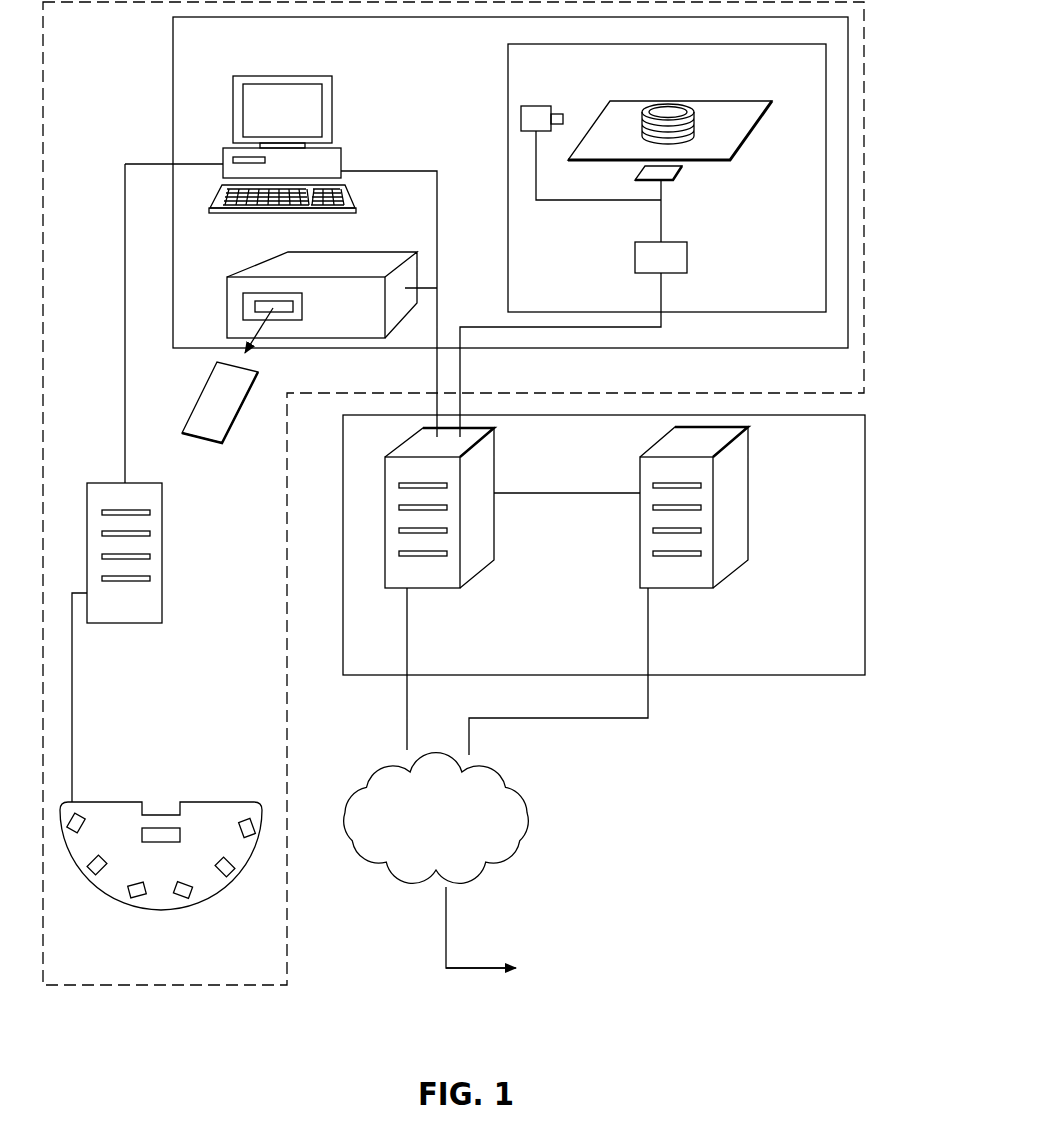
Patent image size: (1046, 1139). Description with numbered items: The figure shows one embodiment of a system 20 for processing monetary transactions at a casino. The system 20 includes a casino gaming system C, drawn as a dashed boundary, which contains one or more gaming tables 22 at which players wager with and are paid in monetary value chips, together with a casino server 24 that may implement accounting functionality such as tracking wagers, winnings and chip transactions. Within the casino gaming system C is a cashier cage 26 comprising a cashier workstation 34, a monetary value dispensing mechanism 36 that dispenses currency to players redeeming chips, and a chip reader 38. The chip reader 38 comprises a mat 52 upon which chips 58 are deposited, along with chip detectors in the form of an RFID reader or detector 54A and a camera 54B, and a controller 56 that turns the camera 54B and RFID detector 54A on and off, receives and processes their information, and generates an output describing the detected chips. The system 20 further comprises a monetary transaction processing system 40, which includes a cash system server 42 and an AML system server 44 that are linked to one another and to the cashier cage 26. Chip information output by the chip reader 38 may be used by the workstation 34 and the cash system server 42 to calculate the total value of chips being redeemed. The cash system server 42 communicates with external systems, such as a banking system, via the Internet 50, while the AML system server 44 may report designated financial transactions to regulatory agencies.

The casino gaming system C is at (864, 135).
The system 20 is at (897, 302).
The gaming table 22 is at (208, 891).
The casino server 24 is at (162, 532).
The cashier cage 26 is at (173, 52).
The cashier workstation 34 is at (340, 148).
The monetary value dispensing mechanism 36 is at (380, 258).
The chip reader 38 is at (508, 64).
The monetary transaction processing system 40 is at (865, 509).
The cash system server 42 is at (485, 465).
The AML system server 44 is at (737, 468).
The Internet 50 is at (545, 806).
The mat 52 is at (730, 140).
The RFID reader or detector 54A is at (680, 172).
The camera 54B is at (537, 106).
The controller 56 is at (687, 250).
The chips 58 is at (686, 104).